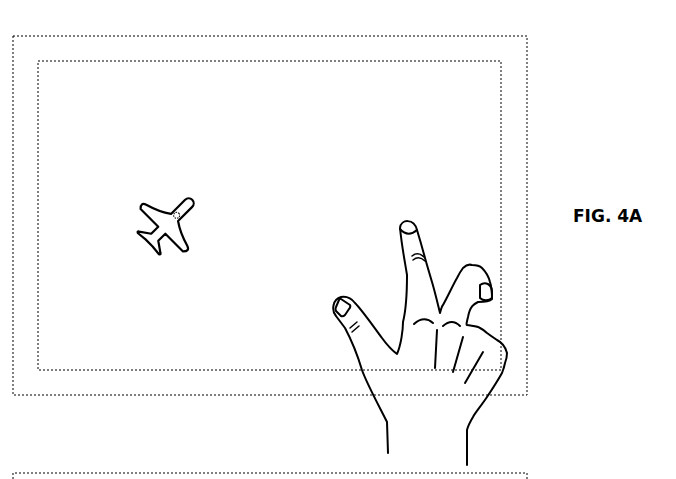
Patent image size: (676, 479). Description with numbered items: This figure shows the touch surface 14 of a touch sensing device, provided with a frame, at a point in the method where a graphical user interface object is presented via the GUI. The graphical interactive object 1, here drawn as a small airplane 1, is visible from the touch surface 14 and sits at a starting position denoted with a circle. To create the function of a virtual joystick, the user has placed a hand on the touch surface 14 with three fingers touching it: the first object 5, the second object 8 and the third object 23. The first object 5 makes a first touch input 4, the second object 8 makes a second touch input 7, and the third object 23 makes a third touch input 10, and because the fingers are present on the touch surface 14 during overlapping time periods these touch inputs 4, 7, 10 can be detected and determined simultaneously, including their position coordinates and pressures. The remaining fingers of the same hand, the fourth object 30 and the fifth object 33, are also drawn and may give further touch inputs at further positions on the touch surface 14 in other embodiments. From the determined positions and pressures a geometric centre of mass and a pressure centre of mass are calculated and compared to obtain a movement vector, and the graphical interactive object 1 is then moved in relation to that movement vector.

The touch surface 14 is at (69, 91).
The graphical interactive object 1 is at (160, 210).
The first touch input 4 is at (410, 225).
The first object 5 is at (413, 240).
The second touch input 7 is at (343, 298).
The second object 8 is at (335, 307).
The third object 23 is at (466, 282).
The third touch input 10 is at (492, 297).
The fourth object 30 is at (482, 327).
The fifth object 33 is at (508, 350).